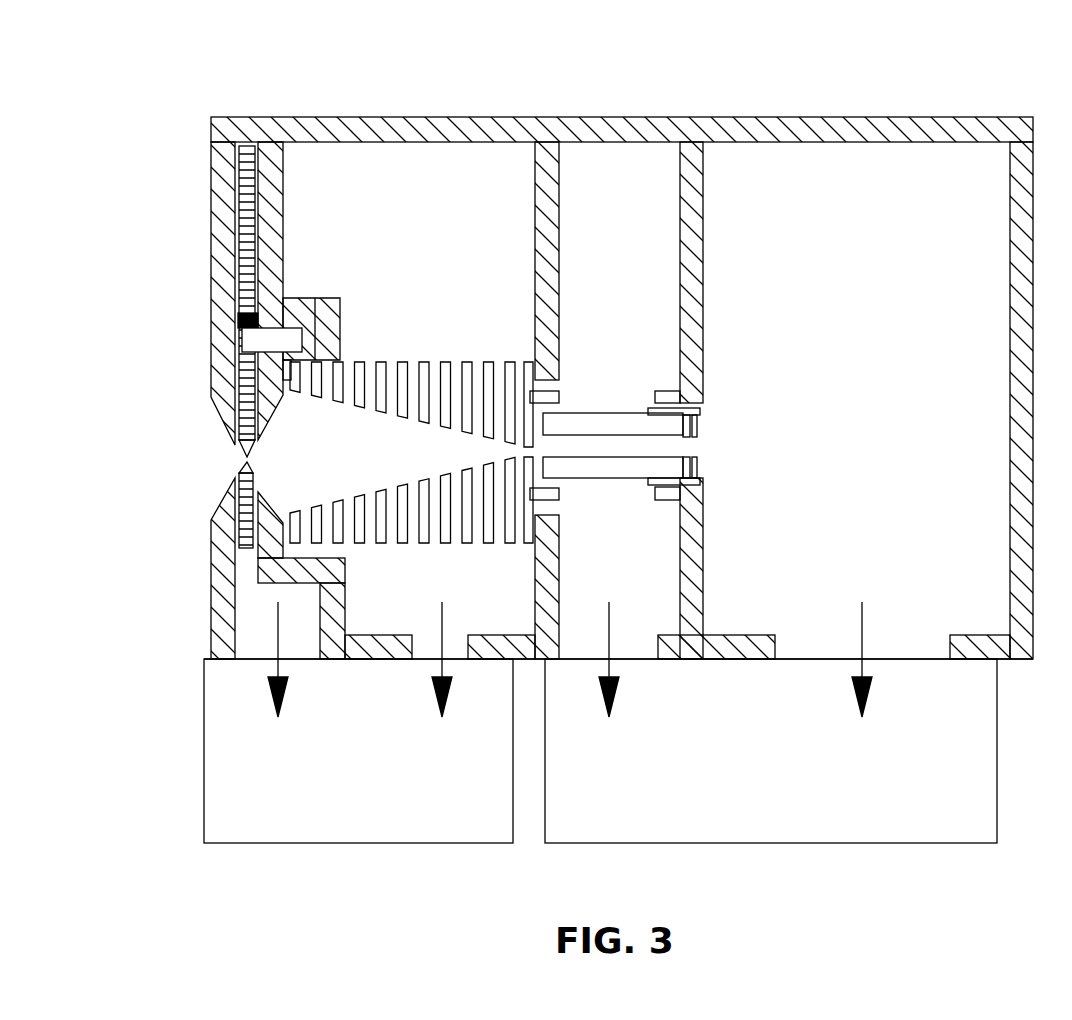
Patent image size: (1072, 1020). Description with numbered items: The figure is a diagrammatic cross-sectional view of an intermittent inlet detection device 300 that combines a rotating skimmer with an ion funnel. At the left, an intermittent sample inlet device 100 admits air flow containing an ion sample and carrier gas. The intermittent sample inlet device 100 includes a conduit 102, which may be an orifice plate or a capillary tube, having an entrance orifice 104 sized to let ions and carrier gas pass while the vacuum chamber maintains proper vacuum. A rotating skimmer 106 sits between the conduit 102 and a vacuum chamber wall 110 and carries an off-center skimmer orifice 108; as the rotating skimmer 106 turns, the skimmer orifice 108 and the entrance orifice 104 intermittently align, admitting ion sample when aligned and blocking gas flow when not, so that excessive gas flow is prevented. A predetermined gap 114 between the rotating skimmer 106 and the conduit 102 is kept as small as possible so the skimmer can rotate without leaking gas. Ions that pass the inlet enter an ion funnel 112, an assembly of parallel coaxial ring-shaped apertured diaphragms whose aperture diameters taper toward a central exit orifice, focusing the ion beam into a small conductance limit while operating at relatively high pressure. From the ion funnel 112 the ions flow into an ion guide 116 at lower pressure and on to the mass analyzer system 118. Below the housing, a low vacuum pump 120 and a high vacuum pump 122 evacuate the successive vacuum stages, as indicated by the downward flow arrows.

The intermittent inlet detection device 300 is at (134, 97).
The intermittent sample inlet device 100 is at (206, 481).
The conduit 102 is at (218, 298).
The entrance orifice 104 is at (220, 454).
The rotating skimmer 106 is at (245, 382).
The skimmer orifice 108 is at (258, 465).
The vacuum chamber wall 110 is at (277, 150).
The ion funnel 112 is at (463, 372).
The predetermined gap 114 is at (248, 150).
The ion guide 116 is at (598, 425).
The mass analyzer system 118 is at (886, 160).
The low vacuum pump 120 is at (483, 812).
The high vacuum pump 122 is at (842, 808).